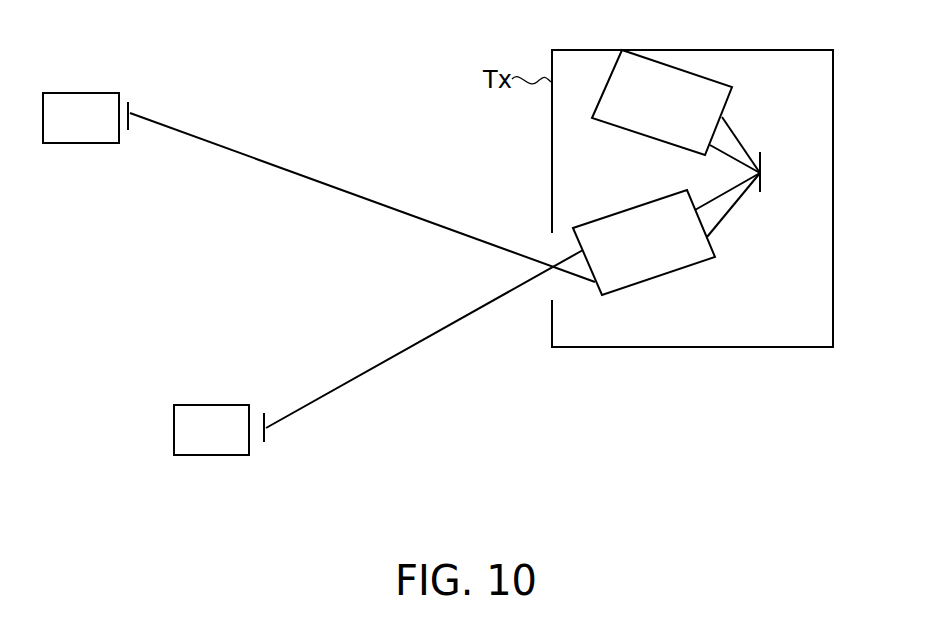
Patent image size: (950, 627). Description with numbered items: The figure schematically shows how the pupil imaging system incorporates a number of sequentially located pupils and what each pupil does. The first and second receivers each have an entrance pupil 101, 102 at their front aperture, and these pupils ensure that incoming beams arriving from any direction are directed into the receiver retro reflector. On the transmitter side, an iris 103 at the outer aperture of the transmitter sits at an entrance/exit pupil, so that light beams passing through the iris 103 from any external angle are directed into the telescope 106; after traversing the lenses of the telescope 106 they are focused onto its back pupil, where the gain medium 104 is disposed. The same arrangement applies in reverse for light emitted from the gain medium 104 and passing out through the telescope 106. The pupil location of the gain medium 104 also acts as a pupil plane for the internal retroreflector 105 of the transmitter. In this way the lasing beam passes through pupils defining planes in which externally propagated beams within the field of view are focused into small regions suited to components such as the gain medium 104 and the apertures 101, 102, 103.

The entrance pupil 101 is at (132, 117).
The entrance pupil 102 is at (268, 432).
The iris 103 is at (553, 268).
The gain medium 104 is at (760, 192).
The internal retroreflector 105 is at (675, 66).
The telescope 106 is at (604, 218).